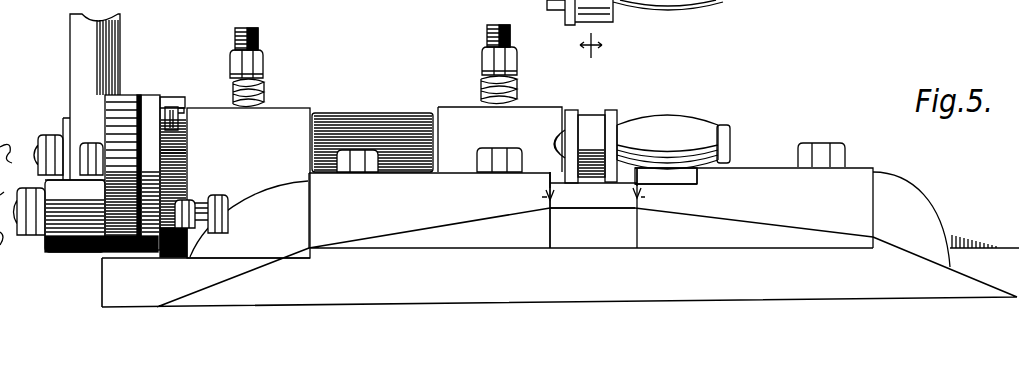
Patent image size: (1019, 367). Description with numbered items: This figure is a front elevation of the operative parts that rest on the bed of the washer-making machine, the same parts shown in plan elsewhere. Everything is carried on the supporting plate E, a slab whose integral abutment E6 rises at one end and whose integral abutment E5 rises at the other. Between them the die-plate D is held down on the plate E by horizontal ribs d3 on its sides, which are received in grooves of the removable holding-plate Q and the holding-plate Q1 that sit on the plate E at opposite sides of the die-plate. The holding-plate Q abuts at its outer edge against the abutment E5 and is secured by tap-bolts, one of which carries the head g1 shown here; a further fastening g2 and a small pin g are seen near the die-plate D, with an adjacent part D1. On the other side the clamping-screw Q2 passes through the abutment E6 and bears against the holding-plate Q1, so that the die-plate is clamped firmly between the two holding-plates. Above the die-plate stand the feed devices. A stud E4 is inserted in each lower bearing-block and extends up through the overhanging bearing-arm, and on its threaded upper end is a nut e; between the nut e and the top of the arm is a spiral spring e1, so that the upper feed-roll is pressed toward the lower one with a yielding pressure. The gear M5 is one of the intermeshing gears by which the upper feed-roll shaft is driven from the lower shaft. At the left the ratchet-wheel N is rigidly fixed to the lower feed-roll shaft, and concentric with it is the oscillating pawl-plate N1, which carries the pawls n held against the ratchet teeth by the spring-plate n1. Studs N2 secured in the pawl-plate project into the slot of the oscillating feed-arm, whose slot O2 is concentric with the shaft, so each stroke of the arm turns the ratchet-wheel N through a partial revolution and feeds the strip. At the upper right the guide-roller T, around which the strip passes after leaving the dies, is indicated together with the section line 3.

The upright plate O2 is at (80, 52).
The stud N2 is at (95, 157).
The holding-plate Q is at (121, 107).
The pawl-plate N1 is at (148, 100).
The spring-plate n1 is at (178, 112).
The stud E4 is at (260, 30).
The nut e is at (264, 58).
The spiral spring e1 is at (265, 96).
The pawl n is at (183, 152).
The ratchet-wheel N is at (187, 177).
The clamping-screw Q2 is at (188, 203).
The abutment E6 is at (249, 219).
The gear M5 is at (382, 114).
The nut g2 is at (498, 153).
The holding-plate Q1 is at (429, 210).
The plate E is at (559, 257).
The die-plate D is at (593, 208).
The rib d3 is at (595, 194).
The pin g is at (593, 187).
The die holder D1 is at (666, 197).
The abutment E5 is at (946, 219).
The guide-roller T is at (593, 22).
The section line 3 is at (591, 52).
The nut g1 is at (822, 157).